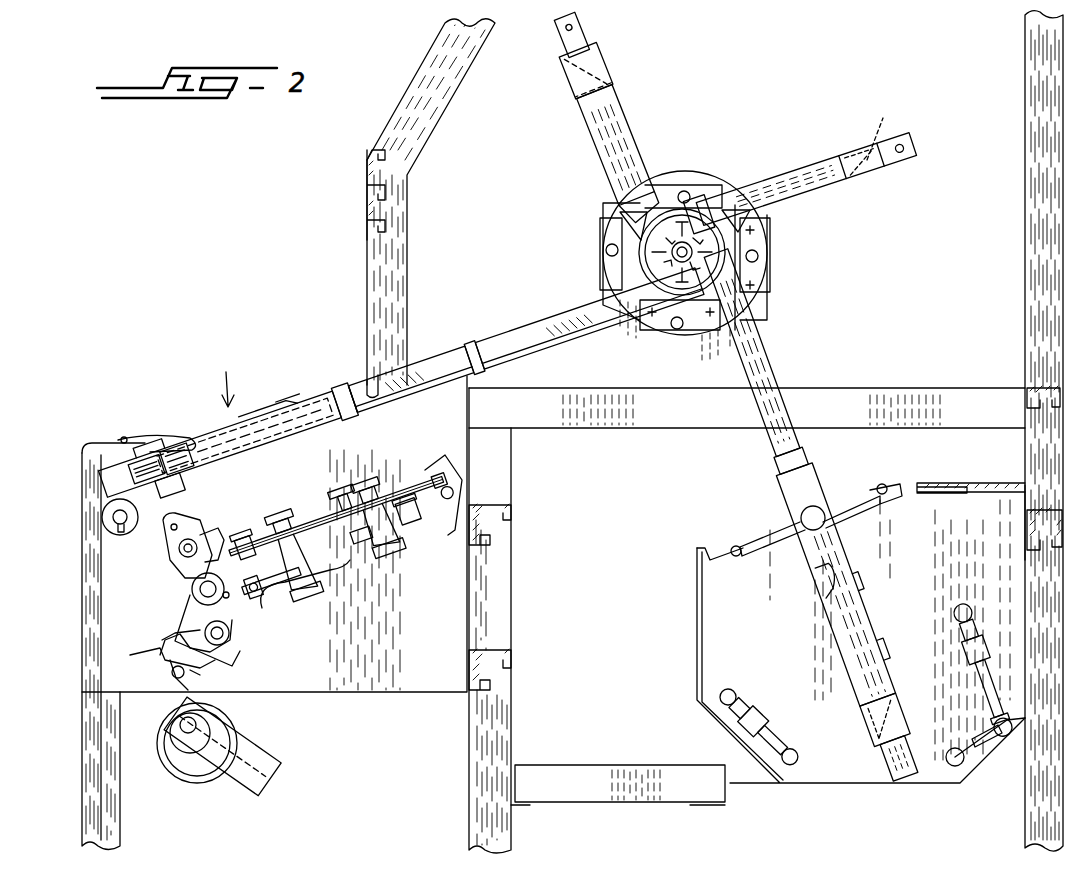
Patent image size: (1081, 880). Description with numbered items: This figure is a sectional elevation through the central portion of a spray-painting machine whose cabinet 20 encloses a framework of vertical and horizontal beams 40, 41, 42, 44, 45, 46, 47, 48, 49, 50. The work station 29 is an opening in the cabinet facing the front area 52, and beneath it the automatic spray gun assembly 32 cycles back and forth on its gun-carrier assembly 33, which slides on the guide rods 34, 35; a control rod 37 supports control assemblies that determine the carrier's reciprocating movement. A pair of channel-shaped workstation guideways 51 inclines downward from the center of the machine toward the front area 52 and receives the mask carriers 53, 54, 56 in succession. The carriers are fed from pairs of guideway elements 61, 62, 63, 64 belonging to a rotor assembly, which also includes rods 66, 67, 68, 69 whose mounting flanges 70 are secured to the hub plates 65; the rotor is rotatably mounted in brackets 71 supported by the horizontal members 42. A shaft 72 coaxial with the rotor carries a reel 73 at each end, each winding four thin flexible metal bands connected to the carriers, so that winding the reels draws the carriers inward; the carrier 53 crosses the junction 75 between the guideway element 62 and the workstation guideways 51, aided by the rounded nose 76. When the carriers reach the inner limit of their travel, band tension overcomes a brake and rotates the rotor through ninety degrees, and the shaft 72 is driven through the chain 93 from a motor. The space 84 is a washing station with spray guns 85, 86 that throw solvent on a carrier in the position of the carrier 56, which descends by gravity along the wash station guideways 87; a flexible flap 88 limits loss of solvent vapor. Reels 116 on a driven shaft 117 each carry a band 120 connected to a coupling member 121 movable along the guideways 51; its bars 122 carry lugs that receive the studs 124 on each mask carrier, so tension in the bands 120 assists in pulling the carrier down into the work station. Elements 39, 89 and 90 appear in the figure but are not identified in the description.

The cabinet 20 is at (355, 186).
The work station 29 is at (227, 377).
The spray gun assembly 32 is at (312, 599).
The gun-carrier assembly 33 is at (195, 598).
The guide rod 34 is at (178, 556).
The guide rod 35 is at (230, 636).
The control rod 37 is at (185, 723).
The roller 39 is at (175, 761).
The beam 40 is at (120, 833).
The beam 41 is at (500, 729).
The horizontal member 42 is at (556, 418).
The beam 44 is at (395, 263).
The beam 45 is at (1027, 390).
The beam 46 is at (1052, 540).
The beam 47 is at (509, 523).
The beam 48 is at (509, 669).
The beam 49 is at (386, 157).
The beam 50 is at (386, 227).
The workstation guideway 51 is at (426, 369).
The front area 52 is at (80, 452).
The mask carrier 53 is at (305, 411).
The mask carrier 54 is at (612, 136).
The mask carrier 56 is at (838, 631).
The guideway element 61 is at (765, 373).
The guideway element 62 is at (520, 336).
The guideway element 63 is at (592, 66).
The guideway element 64 is at (878, 119).
The hub plate 65 is at (762, 298).
The rod 66 is at (758, 257).
The rod 67 is at (690, 192).
The rod 68 is at (606, 251).
The rod 69 is at (677, 330).
The mounting flange 70 is at (762, 278).
The bracket 71 is at (758, 321).
The shaft 72 is at (715, 233).
The reel 73 is at (640, 271).
The junction 75 is at (478, 350).
The rounded nose 76 is at (352, 396).
The washing station 84 is at (861, 634).
The spray gun 85 is at (958, 607).
The spray gun 86 is at (740, 681).
The wash station guideway 87 is at (792, 469).
The flap 88 is at (778, 531).
The link 89 is at (845, 501).
The tray wall 90 is at (698, 595).
The chain 93 is at (1025, 791).
The reel 116 is at (102, 516).
The shaft 117 is at (113, 524).
The band 120 is at (140, 473).
The coupling member 121 is at (158, 441).
The bar 122 is at (208, 441).
The stud 124 is at (183, 489).